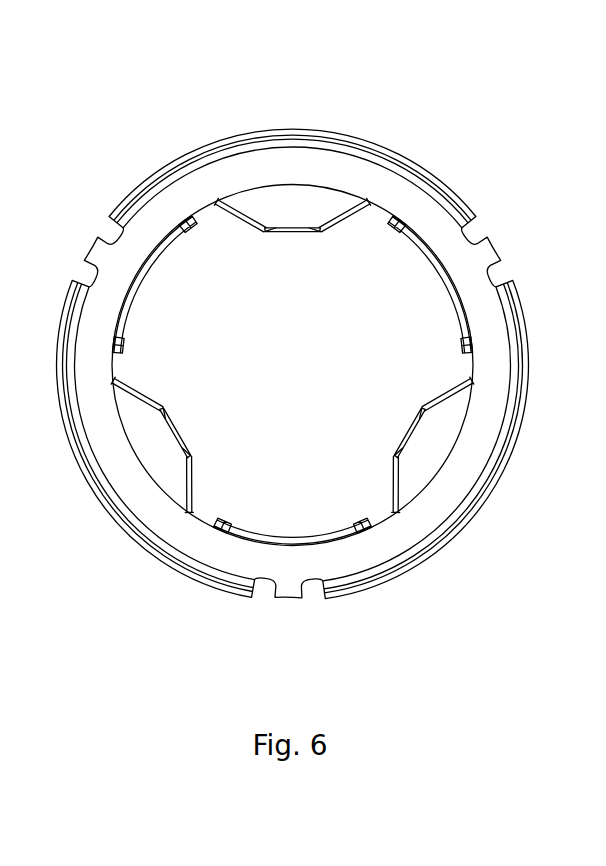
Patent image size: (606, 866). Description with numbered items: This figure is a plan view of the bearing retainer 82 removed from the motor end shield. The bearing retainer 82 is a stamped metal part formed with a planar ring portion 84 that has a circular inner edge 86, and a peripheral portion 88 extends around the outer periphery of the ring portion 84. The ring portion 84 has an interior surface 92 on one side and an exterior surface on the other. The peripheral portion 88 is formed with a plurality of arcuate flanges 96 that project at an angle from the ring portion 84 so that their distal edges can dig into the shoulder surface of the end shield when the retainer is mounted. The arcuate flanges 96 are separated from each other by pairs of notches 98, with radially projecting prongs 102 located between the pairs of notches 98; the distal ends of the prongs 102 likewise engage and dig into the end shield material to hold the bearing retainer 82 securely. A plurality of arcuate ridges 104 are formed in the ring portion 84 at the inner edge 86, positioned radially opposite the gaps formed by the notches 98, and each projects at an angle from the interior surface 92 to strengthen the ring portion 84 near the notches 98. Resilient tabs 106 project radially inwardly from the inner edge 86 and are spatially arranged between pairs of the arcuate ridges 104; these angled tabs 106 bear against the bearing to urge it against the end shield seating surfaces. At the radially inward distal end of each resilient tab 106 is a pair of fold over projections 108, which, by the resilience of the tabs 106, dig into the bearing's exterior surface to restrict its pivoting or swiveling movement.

The bearing retainer 82 is at (292, 118).
The planar ring portion 84 is at (292, 126).
The circular inner edge 86 is at (470, 375).
The peripheral portion 88 is at (372, 152).
The interior surface 92 is at (87, 437).
The arcuate flanges 96 is at (269, 323).
The notches 98 is at (99, 206).
The radially projecting prongs 102 is at (306, 409).
The arcuate ridges 104 is at (147, 268).
The resilient tabs 106 is at (250, 218).
The fold over projections 108 is at (266, 236).